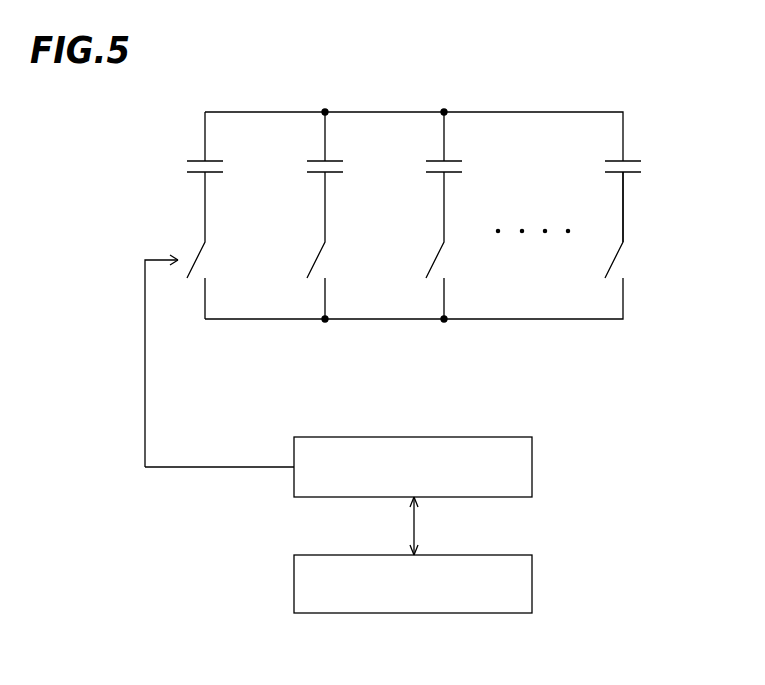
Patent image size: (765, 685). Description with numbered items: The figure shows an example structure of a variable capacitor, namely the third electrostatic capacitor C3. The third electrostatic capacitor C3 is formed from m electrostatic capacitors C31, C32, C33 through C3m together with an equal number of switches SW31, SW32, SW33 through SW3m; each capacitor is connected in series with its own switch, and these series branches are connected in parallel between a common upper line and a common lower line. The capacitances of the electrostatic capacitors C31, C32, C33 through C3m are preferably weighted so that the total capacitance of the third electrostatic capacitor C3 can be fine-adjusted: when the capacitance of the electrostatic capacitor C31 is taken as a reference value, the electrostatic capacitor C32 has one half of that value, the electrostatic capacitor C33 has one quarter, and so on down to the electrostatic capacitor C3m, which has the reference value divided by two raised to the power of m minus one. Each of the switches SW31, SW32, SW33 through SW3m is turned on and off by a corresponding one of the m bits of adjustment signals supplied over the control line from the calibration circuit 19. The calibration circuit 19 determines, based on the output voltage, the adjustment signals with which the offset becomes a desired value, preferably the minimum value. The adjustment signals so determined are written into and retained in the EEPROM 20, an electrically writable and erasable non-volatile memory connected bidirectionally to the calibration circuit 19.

The third electrostatic capacitor C3 is at (445, 185).
The electrostatic capacitor C31 is at (232, 165).
The electrostatic capacitor C32 is at (352, 165).
The electrostatic capacitor C33 is at (471, 165).
The electrostatic capacitor C3m is at (652, 165).
The switch SW31 is at (233, 225).
The switch SW32 is at (354, 225).
The switch SW33 is at (472, 225).
The switch SW3m is at (654, 225).
The m-bits of adjustment signals m is at (135, 373).
The calibration circuit 19 is at (527, 465).
The EEPROM 20 is at (527, 585).